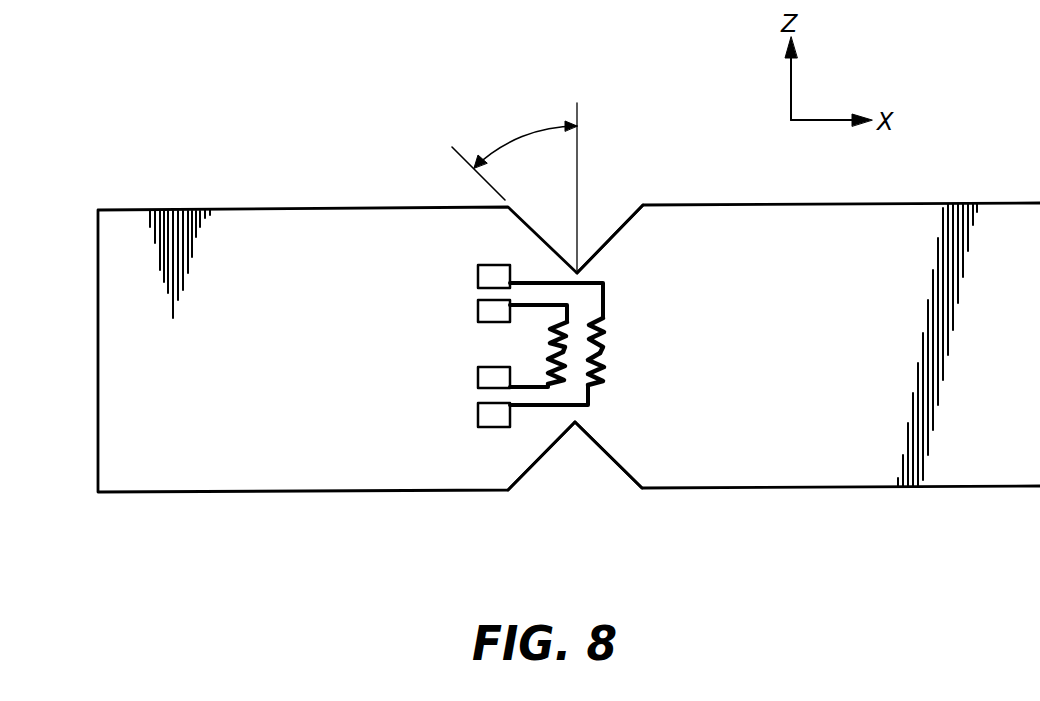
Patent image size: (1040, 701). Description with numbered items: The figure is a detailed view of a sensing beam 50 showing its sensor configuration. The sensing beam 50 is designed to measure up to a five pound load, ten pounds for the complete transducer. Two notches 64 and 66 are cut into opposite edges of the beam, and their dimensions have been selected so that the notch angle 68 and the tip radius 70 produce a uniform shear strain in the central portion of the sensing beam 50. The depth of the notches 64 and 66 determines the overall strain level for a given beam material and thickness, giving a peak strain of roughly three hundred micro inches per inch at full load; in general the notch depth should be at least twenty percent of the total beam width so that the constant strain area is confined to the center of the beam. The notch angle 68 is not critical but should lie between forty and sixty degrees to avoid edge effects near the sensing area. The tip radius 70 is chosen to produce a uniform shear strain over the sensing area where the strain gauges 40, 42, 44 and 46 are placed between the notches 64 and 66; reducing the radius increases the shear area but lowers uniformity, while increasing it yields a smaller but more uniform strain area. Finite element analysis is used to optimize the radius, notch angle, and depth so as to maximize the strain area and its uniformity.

The strain gauge 40 is at (547, 325).
The strain gauge 42 is at (548, 368).
The strain gauge 44 is at (605, 323).
The strain gauge 46 is at (607, 355).
The sensing beam 50 is at (840, 371).
The notch 64 is at (597, 247).
The notch 66 is at (608, 458).
The notch angle 68 is at (532, 140).
The tip radius 70 is at (575, 424).